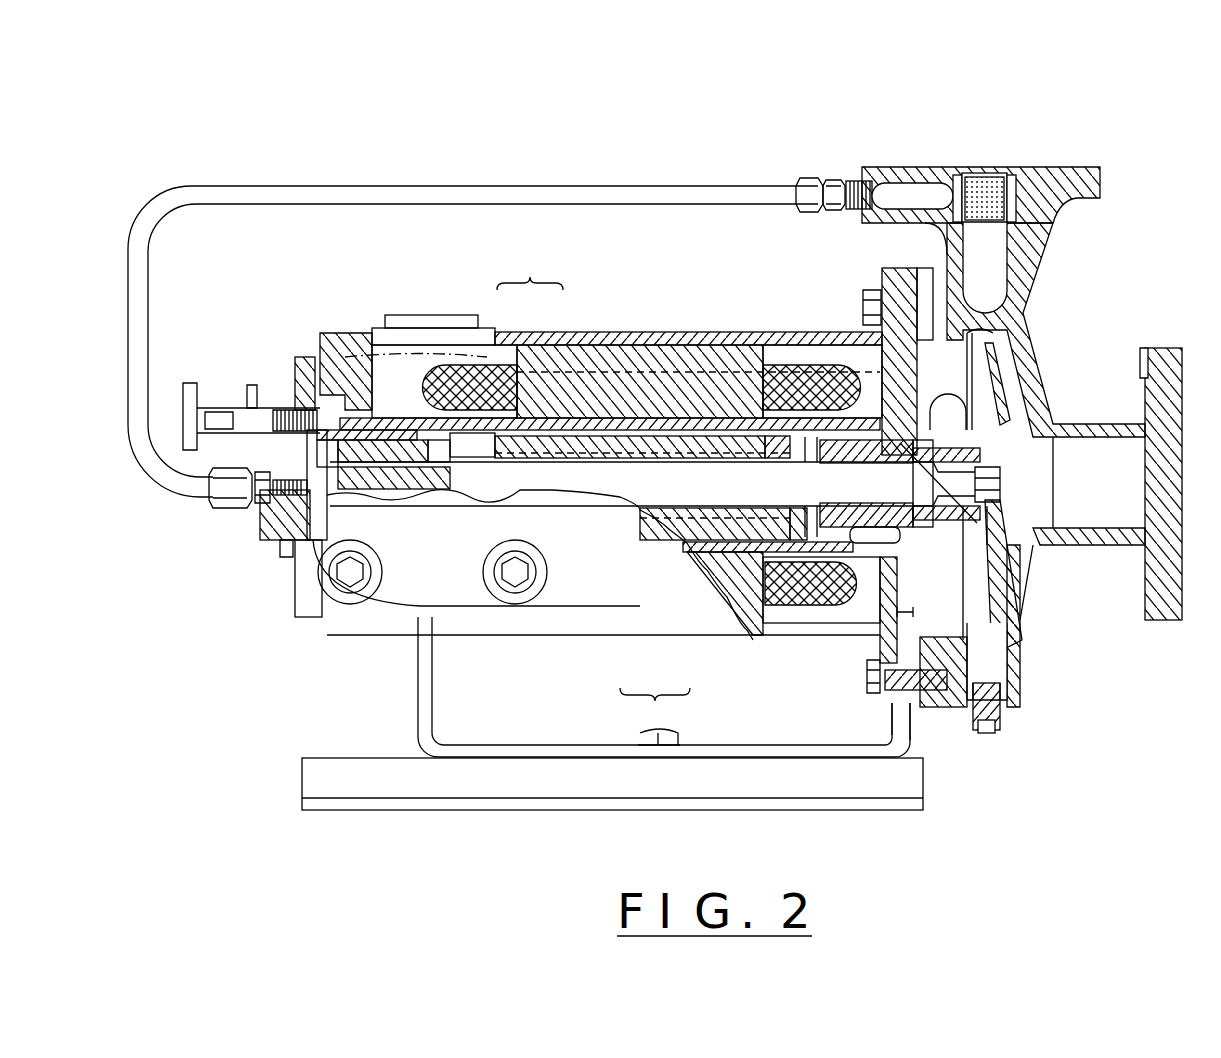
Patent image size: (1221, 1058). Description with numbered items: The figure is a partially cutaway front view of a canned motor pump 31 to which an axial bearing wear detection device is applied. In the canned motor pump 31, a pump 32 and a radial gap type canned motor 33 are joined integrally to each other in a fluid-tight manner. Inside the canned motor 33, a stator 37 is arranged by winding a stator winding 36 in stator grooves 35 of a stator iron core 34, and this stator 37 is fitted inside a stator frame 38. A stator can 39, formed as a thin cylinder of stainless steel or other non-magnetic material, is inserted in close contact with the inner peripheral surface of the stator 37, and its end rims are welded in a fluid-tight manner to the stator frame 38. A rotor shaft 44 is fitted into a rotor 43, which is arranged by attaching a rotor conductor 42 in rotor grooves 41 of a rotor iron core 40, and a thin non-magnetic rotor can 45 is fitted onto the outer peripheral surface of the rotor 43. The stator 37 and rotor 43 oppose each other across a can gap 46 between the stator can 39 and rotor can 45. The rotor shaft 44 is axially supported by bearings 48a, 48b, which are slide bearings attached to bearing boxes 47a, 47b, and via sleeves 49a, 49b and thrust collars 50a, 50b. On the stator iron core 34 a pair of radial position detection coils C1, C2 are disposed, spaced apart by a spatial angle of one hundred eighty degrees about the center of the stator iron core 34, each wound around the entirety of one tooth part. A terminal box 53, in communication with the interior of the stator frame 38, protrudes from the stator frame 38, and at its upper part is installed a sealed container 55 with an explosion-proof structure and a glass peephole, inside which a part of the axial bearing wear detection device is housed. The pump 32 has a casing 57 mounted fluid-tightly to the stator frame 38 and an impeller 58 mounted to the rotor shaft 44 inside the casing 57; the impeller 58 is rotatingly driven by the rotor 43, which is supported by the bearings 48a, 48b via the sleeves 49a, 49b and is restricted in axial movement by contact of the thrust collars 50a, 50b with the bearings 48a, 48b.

The canned motor pump 31 is at (835, 150).
The pump 32 is at (1025, 450).
The canned motor 33 is at (591, 518).
The stator iron core 34 is at (562, 355).
The stator grooves 35 is at (617, 355).
The stator winding 36 is at (490, 395).
The stator 37 is at (530, 269).
The stator frame 38 is at (770, 375).
The stator can 39 is at (655, 430).
The rotor iron core 40 is at (668, 510).
The rotor grooves 41 is at (610, 470).
The rotor conductor 42 is at (637, 540).
The rotor 43 is at (642, 582).
The rotor shaft 44 is at (755, 480).
The rotor can 45 is at (740, 430).
The can gap 46 is at (695, 440).
The bearing box 47a is at (1010, 620).
The bearing box 47b is at (298, 362).
The bearing 48a is at (1018, 550).
The bearing 48b is at (330, 465).
The sleeve 49a is at (845, 555).
The sleeve 49b is at (312, 492).
The thrust collar 50a is at (867, 530).
The thrust collar 50b is at (360, 497).
The terminal box 53 is at (450, 592).
The sealed container 55 is at (440, 316).
The casing 57 is at (1000, 325).
The impeller 58 is at (993, 375).
The radial position detection coil C1 is at (778, 600).
The radial position detection coil C2 is at (785, 395).